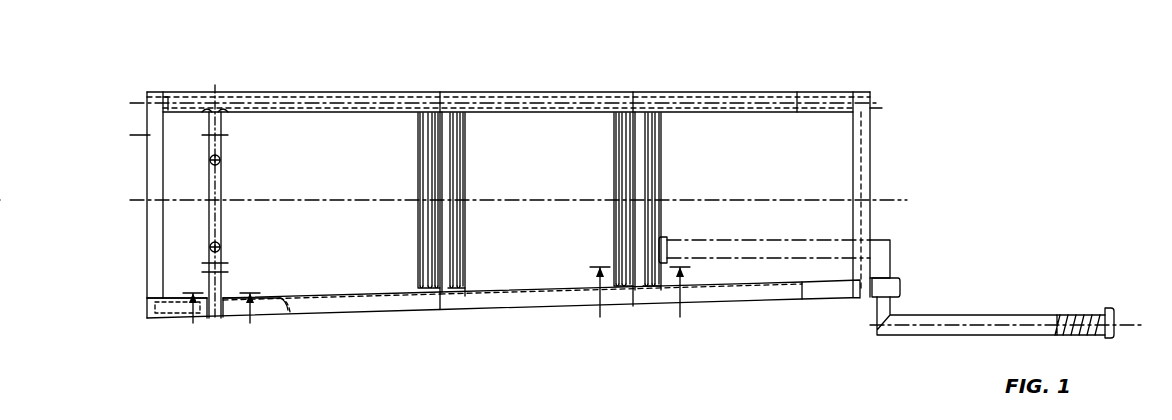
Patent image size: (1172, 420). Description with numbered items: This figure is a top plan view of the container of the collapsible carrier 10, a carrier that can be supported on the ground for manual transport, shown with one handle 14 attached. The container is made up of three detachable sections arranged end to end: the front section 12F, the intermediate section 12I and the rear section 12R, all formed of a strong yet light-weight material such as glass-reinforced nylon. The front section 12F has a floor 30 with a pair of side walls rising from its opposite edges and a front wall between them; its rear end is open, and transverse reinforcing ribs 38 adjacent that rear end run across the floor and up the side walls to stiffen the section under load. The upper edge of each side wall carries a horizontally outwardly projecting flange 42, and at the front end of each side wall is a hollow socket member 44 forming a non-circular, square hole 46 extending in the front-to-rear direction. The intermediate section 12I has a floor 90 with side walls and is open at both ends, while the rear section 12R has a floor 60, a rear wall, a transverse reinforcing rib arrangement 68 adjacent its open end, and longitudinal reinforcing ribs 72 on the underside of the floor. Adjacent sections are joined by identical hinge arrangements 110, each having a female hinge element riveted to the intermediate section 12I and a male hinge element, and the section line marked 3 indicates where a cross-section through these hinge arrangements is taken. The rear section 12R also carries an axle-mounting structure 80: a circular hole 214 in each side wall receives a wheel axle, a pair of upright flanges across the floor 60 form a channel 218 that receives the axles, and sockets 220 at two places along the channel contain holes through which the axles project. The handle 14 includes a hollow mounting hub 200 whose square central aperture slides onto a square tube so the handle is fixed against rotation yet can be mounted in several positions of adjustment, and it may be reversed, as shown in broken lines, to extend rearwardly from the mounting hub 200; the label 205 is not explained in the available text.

The collapsible carrier 10 is at (1043, 133).
The rear container section 12R is at (401, 313).
The intermediate container section 12I is at (557, 311).
The front container section 12F is at (794, 300).
The handle 14 is at (893, 258).
The floor 30 is at (768, 176).
The transverse reinforcing ribs 38 is at (660, 127).
The flange 42 is at (777, 97).
The hollow socket member 44 is at (837, 97).
The hole 46 is at (870, 100).
The floor 60 is at (333, 238).
The transverse reinforcing rib arrangement 68 is at (413, 133).
The longitudinal reinforcing ribs 72 is at (333, 97).
The axle-mounting structure 80 is at (229, 141).
The floor 90 is at (545, 251).
The hinge arrangement 110 is at (447, 115).
The mounting hub 200 is at (903, 293).
The latch 205 is at (604, 414).
The circular hole 214 is at (213, 100).
The channel 218 is at (208, 263).
The sockets 220 is at (208, 160).
The section line 3- 3 is at (635, 300).